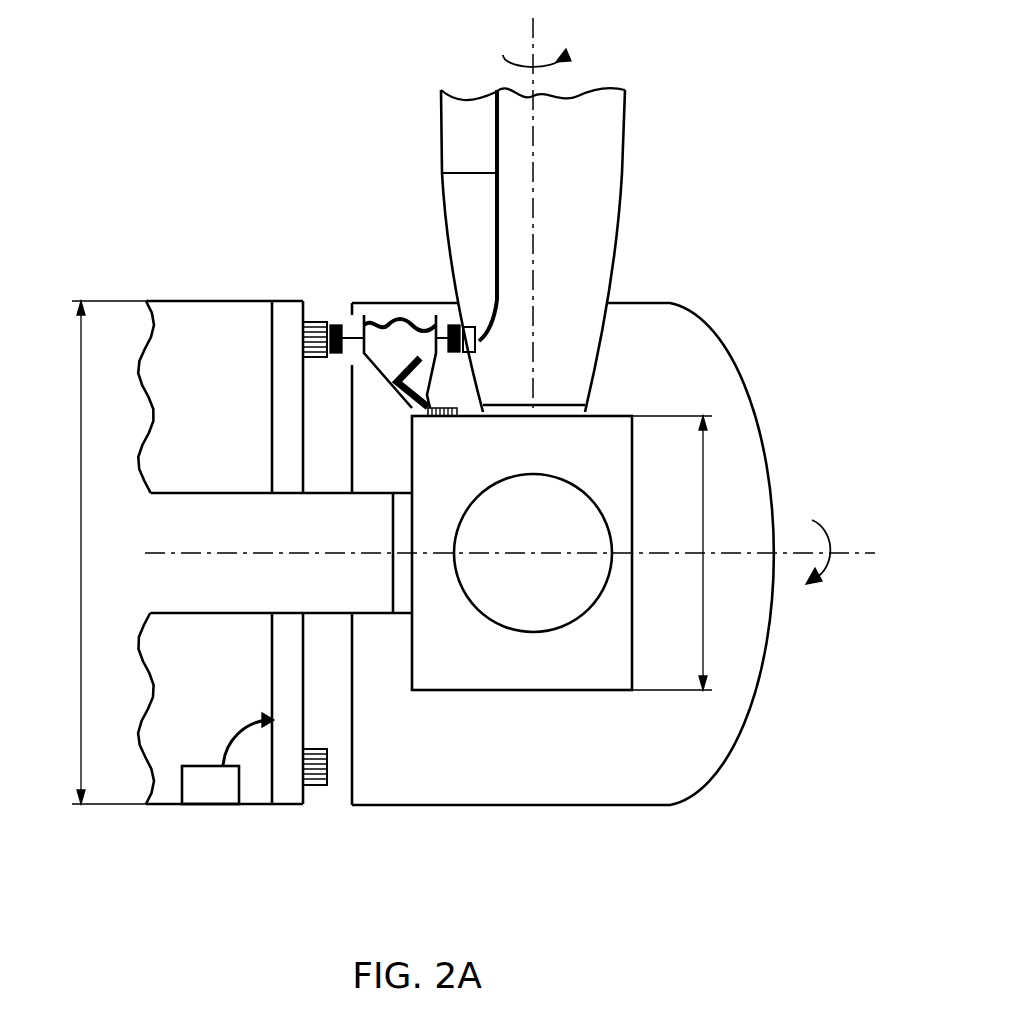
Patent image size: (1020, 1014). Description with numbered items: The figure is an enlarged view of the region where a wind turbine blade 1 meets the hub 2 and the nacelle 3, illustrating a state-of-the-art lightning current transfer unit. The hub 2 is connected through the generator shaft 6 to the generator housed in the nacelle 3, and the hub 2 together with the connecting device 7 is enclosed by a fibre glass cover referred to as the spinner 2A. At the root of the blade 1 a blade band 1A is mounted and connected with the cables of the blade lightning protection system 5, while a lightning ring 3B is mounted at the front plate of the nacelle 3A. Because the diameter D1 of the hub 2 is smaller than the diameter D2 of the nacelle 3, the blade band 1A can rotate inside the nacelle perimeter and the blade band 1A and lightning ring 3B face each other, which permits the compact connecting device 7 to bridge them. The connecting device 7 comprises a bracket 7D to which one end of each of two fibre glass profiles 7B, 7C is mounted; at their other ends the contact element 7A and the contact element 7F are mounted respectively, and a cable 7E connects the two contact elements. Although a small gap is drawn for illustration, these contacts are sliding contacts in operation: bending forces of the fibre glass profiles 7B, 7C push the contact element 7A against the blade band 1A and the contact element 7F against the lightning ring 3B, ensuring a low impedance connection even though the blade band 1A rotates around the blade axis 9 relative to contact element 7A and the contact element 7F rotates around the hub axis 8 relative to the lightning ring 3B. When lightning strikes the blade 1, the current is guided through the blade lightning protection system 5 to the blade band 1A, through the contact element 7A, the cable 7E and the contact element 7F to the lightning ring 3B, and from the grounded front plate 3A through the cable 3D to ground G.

The blade 1 is at (631, 172).
The blade band 1A is at (481, 328).
The hub 2 is at (612, 691).
The spinner 2A is at (783, 483).
The nacelle 3 is at (192, 298).
The front plate of the nacelle 3A is at (283, 800).
The lightning ring 3B is at (316, 320).
The cable 3D is at (233, 736).
The blade lightning protection system 5 is at (441, 173).
The generator shaft 6 is at (207, 598).
The connecting device 7 is at (484, 357).
The contact element 7A is at (455, 354).
The fibre glass profile 7B is at (430, 377).
The fibre glass profile 7C is at (396, 401).
The bracket 7D is at (441, 418).
The cable 7E is at (407, 322).
The contact element 7F is at (337, 356).
The hub axis 8 is at (857, 560).
The blade axis 9 is at (537, 30).
The ground G is at (205, 800).
The diameter of the hub D1 is at (677, 553).
The diameter of the nacelle D2 is at (105, 552).